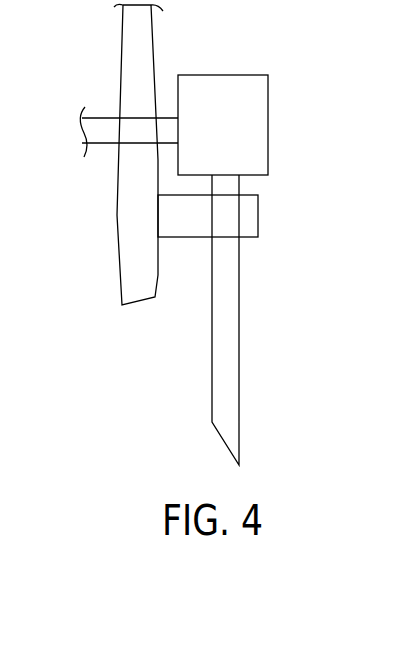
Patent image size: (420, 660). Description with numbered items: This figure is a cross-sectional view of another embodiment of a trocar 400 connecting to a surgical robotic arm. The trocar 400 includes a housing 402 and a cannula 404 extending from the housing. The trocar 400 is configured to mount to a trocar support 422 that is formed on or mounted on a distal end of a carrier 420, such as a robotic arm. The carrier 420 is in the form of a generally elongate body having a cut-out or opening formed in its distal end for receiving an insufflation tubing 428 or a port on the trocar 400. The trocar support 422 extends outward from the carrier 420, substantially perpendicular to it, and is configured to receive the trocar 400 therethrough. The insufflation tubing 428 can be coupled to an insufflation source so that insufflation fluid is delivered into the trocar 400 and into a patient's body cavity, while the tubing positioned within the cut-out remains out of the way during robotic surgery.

The trocar 400 is at (328, 149).
The housing 402 is at (257, 107).
The cannula 404 is at (227, 347).
The carrier 420 is at (147, 48).
The trocar support 422 is at (258, 215).
The insufflation tubing 428 is at (90, 132).